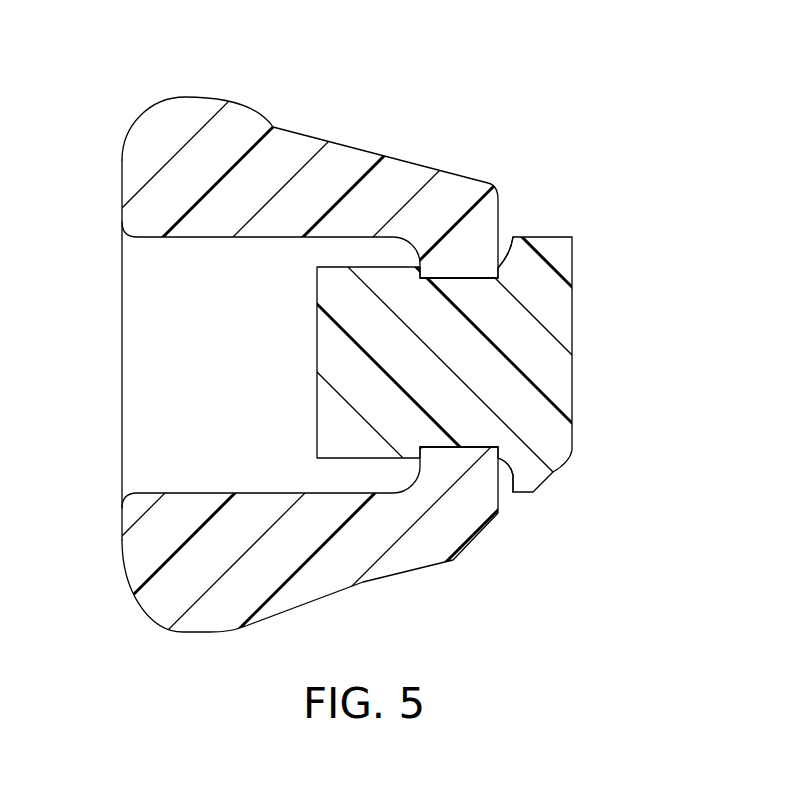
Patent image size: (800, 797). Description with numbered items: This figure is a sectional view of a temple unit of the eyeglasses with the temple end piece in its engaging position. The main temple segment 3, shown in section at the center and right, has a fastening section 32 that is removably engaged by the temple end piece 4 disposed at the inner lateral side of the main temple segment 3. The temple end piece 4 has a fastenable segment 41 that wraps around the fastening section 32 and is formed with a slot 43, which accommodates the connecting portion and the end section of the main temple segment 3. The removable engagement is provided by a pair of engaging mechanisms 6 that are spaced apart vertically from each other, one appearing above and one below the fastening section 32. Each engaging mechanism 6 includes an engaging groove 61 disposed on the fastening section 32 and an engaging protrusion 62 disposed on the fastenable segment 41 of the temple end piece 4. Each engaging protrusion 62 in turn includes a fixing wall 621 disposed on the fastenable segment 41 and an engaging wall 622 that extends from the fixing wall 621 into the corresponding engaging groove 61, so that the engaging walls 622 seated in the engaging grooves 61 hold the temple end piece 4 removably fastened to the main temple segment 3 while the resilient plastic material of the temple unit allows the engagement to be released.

The main temple segment 3 is at (480, 365).
The fastening section 32 is at (477, 350).
The temple end piece 4 is at (293, 342).
The fastenable segment 41 is at (191, 148).
The slot 43 is at (207, 342).
The engaging mechanism 6 is at (409, 328).
The engaging groove 61 is at (470, 280).
The engaging protrusion 62 is at (367, 305).
The fixing wall 621 is at (337, 170).
The engaging wall 622 is at (458, 267).